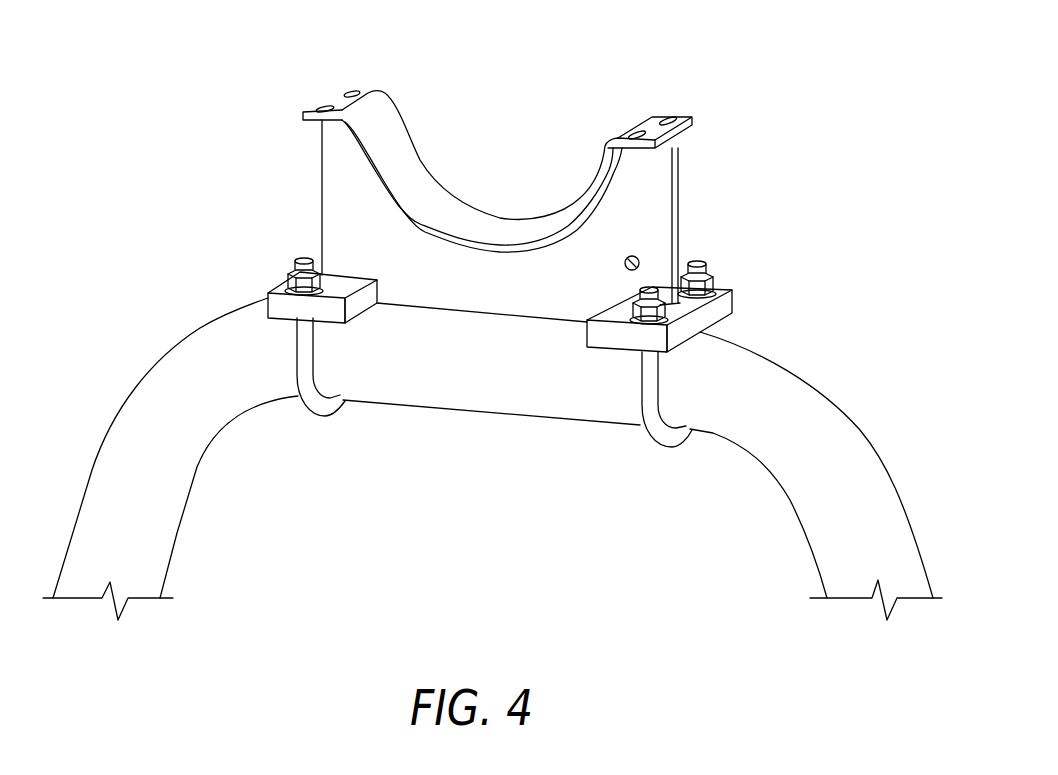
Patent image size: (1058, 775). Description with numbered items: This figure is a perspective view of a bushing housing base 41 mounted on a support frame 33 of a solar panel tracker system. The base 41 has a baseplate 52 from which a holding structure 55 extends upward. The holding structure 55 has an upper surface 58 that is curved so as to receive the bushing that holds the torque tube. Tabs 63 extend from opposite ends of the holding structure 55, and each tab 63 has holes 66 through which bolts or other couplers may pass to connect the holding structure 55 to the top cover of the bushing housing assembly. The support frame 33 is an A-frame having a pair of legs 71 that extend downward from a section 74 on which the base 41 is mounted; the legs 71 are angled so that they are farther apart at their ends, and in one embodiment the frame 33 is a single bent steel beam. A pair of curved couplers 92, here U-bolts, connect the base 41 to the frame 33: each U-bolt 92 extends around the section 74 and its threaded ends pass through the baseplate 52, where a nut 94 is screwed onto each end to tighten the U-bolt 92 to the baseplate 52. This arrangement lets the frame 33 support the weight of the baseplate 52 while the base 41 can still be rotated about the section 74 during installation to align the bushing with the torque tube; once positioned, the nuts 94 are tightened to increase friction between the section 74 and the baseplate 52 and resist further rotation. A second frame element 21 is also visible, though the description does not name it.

The first pipe elbow 21 is at (70, 540).
The support frame 33 is at (902, 473).
The bushing housing base 41 is at (698, 118).
The baseplate 52 is at (725, 302).
The holding structure 55 is at (343, 210).
The upper surface 58 is at (418, 143).
The tabs 63 is at (321, 104).
The holes 66 is at (355, 88).
The legs 71 is at (923, 563).
The section 74 is at (503, 397).
The curved couplers 92 is at (330, 407).
The nut 94 is at (310, 270).